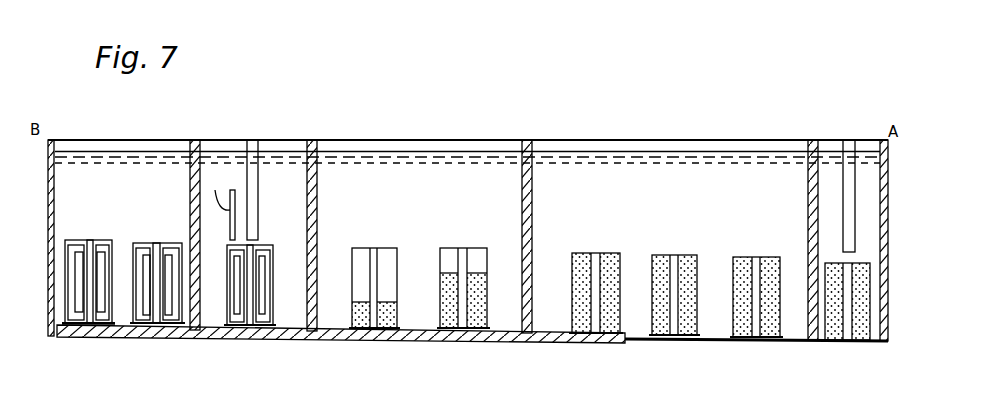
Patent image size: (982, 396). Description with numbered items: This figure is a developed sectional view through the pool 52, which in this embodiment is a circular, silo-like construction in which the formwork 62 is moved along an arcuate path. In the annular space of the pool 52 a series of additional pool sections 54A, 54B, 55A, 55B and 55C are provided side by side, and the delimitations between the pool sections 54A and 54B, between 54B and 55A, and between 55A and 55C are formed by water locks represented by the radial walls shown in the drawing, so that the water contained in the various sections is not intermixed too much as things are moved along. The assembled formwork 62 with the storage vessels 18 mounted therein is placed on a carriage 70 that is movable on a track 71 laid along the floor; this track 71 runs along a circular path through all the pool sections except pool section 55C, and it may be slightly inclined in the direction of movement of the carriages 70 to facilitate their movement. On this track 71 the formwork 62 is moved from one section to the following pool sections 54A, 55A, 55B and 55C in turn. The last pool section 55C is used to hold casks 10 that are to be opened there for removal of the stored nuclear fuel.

The pool 52 is at (563, 139).
The pool section 54A is at (118, 183).
The pool section 54B is at (278, 175).
The pool section 55A is at (397, 173).
The pool section 55B is at (678, 177).
The pool section 55C is at (827, 172).
The track 71 is at (220, 332).
The formwork 62 is at (108, 312).
The storage vessel 18 is at (97, 267).
The carriage 70 is at (103, 326).
The cask 10 is at (840, 333).